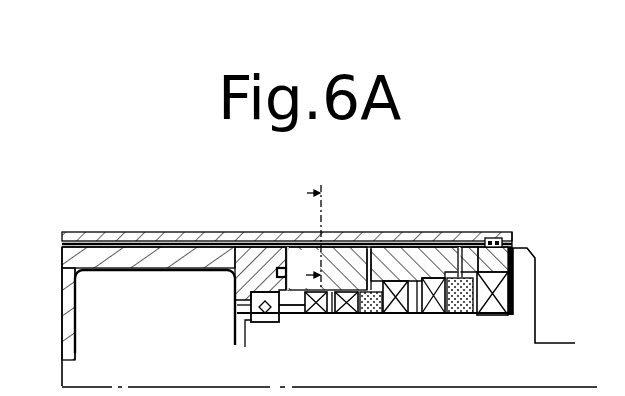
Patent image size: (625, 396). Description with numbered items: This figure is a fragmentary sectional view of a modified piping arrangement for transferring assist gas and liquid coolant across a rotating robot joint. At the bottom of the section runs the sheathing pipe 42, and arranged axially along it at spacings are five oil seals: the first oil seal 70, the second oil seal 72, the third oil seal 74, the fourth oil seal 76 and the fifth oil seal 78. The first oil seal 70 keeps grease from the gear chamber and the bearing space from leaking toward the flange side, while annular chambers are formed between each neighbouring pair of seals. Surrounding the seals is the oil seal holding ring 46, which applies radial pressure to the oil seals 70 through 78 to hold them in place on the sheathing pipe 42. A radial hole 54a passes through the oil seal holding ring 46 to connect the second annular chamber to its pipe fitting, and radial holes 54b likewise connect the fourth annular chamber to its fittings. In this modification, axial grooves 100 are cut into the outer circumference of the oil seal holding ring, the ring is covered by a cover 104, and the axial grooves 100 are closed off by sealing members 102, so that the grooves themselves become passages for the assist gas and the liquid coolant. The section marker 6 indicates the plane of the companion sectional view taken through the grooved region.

The sheathing pipe 42 is at (527, 300).
The cover 104 is at (148, 232).
The oil seal holding ring 46 is at (255, 258).
The axial grooves 100 is at (422, 232).
The radial hole 54a is at (361, 259).
The radial holes 54b is at (458, 240).
The section line 6 is at (306, 228).
The sealing members 102 is at (498, 232).
The first oil seal 70 is at (312, 317).
The second oil seal 72 is at (347, 317).
The third oil seal 74 is at (397, 317).
The fourth oil seal 76 is at (437, 317).
The fifth oil seal 78 is at (495, 318).